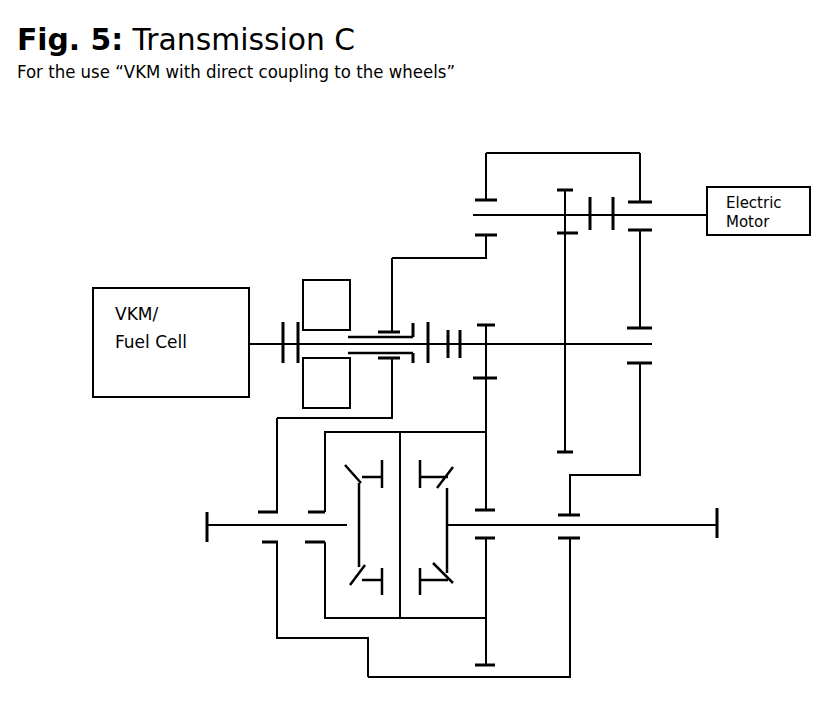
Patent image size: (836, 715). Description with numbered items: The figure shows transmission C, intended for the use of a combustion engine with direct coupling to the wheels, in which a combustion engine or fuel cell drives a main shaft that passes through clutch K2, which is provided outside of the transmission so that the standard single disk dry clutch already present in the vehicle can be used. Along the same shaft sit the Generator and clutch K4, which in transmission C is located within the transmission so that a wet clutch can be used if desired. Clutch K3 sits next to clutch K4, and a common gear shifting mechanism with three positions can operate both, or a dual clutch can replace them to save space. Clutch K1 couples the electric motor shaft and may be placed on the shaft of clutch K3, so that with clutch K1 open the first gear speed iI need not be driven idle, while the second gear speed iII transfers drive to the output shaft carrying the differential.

The clutch K1 is at (606, 197).
The clutch K2 is at (280, 323).
The clutch K3 is at (463, 323).
The clutch K4 is at (381, 326).
The gear stage i_I iI is at (577, 321).
The gear stage i_II iII is at (498, 495).
The generator Generator is at (327, 295).